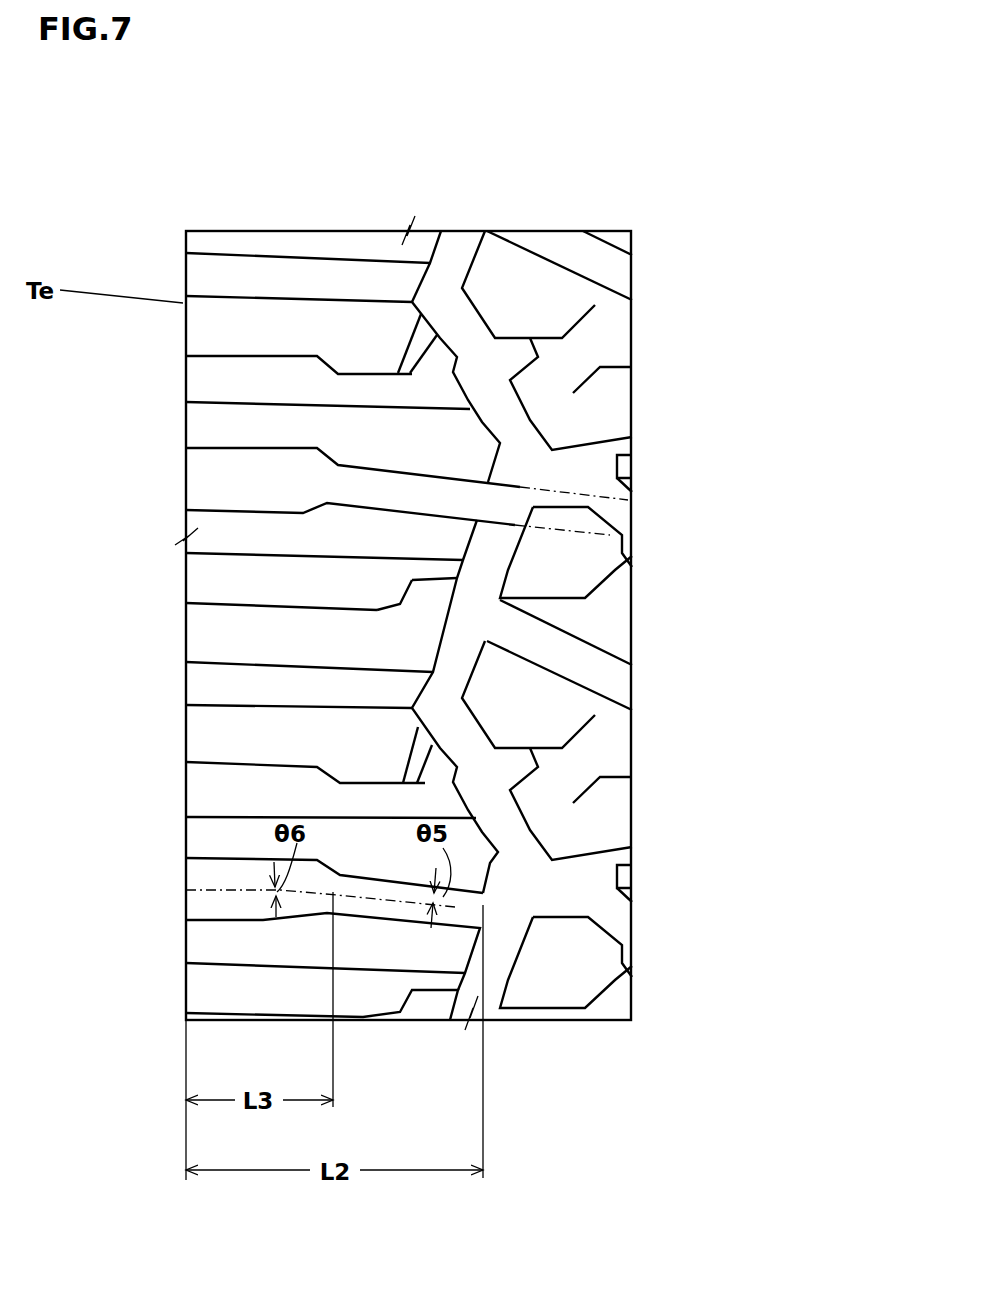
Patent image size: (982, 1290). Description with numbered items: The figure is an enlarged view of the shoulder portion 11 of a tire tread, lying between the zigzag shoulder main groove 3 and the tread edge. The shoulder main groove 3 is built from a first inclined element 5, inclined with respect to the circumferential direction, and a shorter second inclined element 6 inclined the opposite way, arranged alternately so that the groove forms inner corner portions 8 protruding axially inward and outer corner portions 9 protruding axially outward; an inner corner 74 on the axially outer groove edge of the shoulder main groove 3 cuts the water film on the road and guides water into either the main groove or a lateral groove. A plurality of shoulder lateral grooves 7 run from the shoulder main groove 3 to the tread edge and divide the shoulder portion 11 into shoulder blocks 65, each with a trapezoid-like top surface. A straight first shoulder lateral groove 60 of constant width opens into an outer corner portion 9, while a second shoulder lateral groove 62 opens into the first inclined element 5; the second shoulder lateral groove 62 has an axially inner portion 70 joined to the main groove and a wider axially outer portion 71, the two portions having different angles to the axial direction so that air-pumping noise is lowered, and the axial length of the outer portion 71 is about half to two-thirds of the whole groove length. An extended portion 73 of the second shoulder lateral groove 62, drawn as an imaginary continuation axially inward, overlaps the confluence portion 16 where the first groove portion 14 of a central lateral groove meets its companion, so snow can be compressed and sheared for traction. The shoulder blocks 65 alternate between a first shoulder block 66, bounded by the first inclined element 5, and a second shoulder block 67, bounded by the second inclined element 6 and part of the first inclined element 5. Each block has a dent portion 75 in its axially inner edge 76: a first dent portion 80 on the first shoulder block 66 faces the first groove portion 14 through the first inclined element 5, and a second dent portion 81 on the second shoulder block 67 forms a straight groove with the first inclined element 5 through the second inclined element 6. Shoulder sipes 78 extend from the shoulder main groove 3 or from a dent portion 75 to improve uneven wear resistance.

The shoulder main groove 3 is at (457, 250).
The first inclined element 5 is at (477, 627).
The second inclined element 6 is at (467, 330).
The shoulder lateral groove 7 is at (275, 766).
The inner corner portion 8 is at (527, 465).
The outer corner portion 9 is at (412, 690).
The shoulder portion 11 is at (295, 327).
The first groove portion 14 is at (553, 650).
The confluence portion 16 is at (578, 472).
The lateral groove 60 is at (313, 206).
The second shoulder lateral groove 62 is at (275, 766).
The shoulder block 65 is at (251, 638).
The first shoulder block 66 is at (293, 584).
The second shoulder block 67 is at (260, 375).
The inner portion 70 is at (387, 493).
The outer portion 71 is at (247, 477).
The extended portion 73 is at (620, 498).
The inner corner 74 is at (495, 440).
The dent portion 75 is at (562, 485).
The axially inner edge 76 is at (462, 382).
The shoulder sipe 78 is at (270, 356).
The first dent portion 80 is at (433, 602).
The second dent portion 81 is at (420, 335).